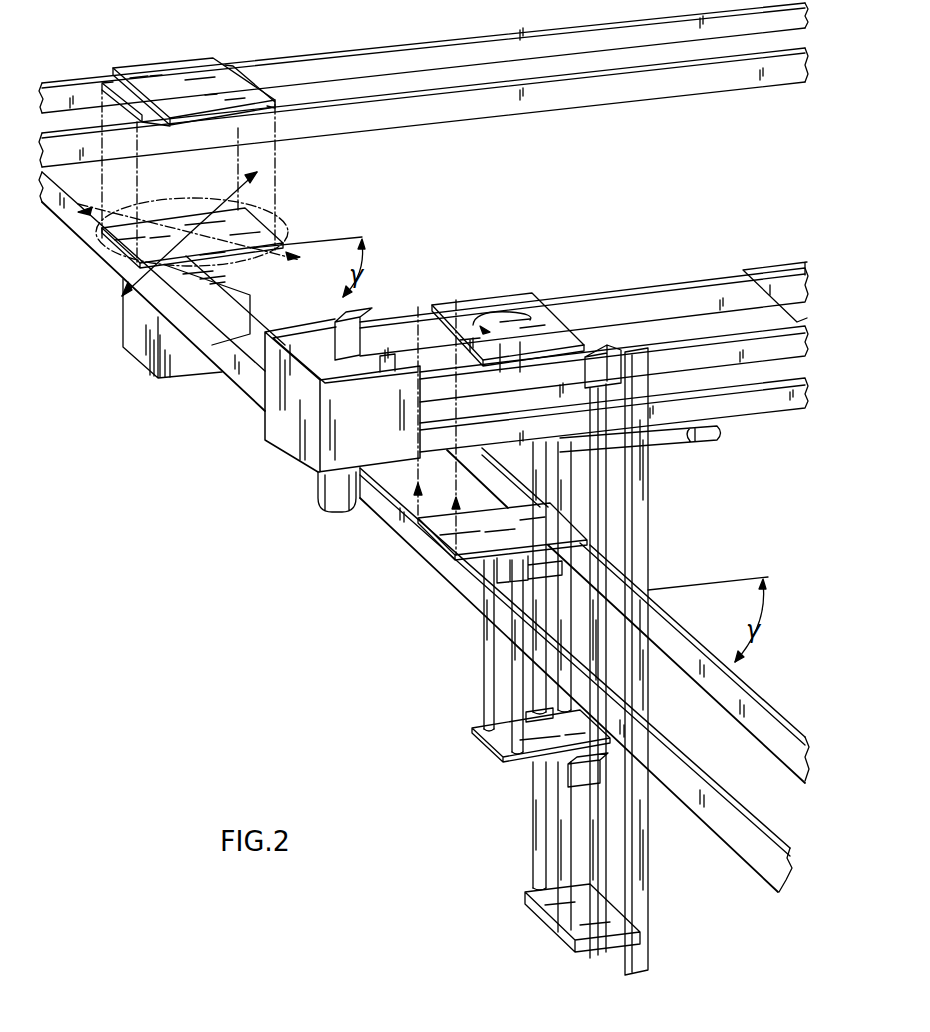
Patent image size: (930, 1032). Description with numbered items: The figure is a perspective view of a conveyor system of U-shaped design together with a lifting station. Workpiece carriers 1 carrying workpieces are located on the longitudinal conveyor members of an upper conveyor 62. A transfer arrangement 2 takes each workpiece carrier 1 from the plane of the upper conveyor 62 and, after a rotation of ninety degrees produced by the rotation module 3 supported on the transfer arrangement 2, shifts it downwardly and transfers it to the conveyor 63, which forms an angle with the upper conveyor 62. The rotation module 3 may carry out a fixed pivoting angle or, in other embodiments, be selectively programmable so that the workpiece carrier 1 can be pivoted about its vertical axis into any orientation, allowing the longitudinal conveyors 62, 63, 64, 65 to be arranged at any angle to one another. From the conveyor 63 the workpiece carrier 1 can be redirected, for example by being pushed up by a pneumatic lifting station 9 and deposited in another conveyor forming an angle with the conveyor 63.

The workpiece carrier 1 is at (112, 259).
The transfer arrangement 2 is at (578, 760).
The rotation module 3 is at (505, 550).
The pneumatic lifting station 9 is at (135, 322).
The upper conveyor 62 is at (294, 76).
The conveyor 63 is at (767, 863).
The longitudinal conveyor 64 is at (716, 347).
The longitudinal conveyor 65 is at (734, 396).